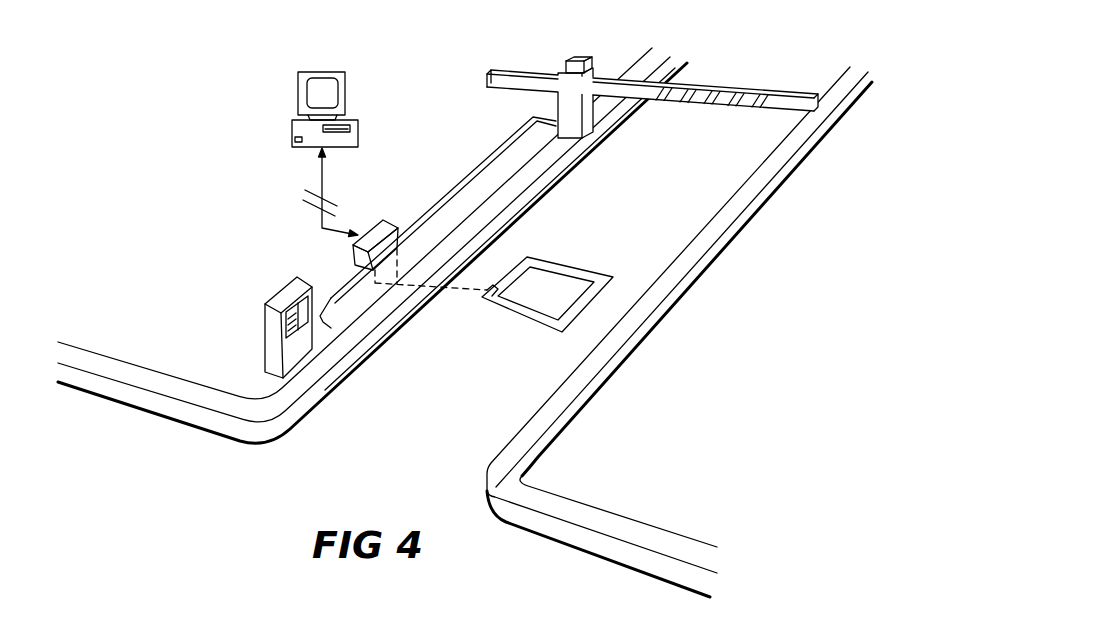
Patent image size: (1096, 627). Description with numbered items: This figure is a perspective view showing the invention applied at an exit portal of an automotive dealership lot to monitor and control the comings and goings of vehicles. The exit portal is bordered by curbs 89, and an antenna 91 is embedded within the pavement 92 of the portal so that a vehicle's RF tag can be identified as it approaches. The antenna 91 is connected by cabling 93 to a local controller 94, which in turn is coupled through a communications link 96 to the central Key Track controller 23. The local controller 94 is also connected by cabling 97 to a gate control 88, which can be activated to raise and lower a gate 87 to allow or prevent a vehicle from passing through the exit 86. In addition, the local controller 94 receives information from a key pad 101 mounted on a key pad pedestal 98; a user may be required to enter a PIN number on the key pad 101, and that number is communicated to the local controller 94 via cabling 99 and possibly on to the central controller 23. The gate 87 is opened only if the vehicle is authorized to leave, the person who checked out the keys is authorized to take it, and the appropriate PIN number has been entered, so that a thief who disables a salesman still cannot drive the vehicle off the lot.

The central Key Track controller 23 is at (362, 92).
The exit 86 is at (611, 82).
The gate 87 is at (723, 88).
The gate control 88 is at (578, 62).
The curbs 89 is at (457, 245).
The antenna 91 is at (578, 250).
The pavement 92 is at (452, 422).
The cabling 93 is at (450, 294).
The local controller 94 is at (378, 226).
The communications link 96 is at (320, 217).
The cabling 97 is at (503, 140).
The key pad pedestal 98 is at (265, 363).
The cabling 99 is at (329, 298).
The key pad 101 is at (298, 313).